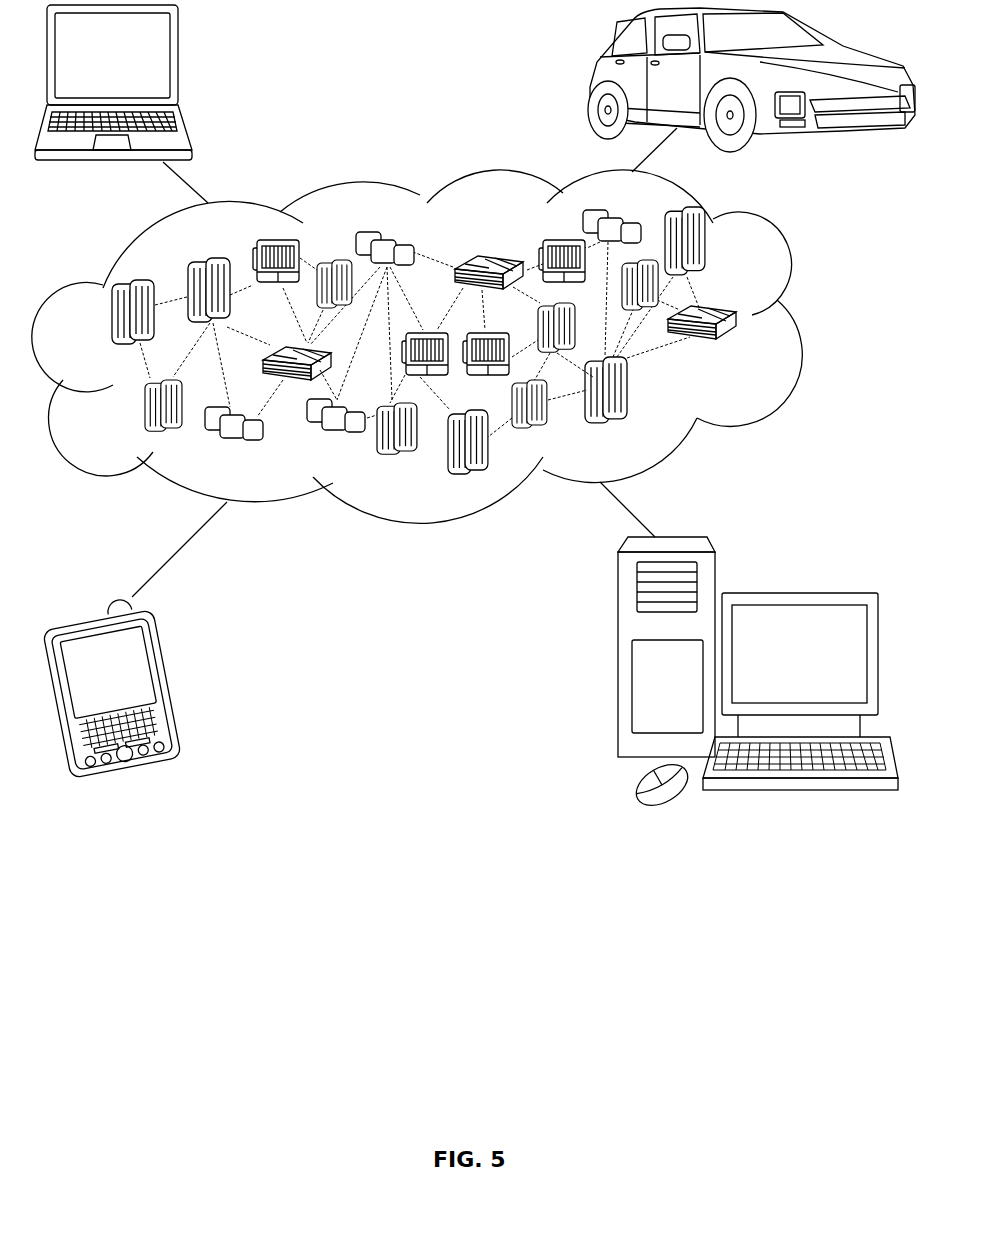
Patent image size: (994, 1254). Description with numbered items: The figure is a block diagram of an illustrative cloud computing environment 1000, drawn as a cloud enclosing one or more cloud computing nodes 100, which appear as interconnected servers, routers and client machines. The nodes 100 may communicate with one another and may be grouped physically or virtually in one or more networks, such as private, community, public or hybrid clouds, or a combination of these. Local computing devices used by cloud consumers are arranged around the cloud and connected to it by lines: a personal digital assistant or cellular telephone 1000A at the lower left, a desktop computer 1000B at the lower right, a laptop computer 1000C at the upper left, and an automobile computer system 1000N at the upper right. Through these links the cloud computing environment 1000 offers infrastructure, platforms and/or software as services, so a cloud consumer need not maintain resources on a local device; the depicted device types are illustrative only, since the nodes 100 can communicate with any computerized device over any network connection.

The cloud computing environment 1000 is at (797, 322).
The cloud computing nodes 100 is at (752, 352).
The personal digital assistant (PDA) or cellular telephone 1000A is at (170, 680).
The desktop computer 1000B is at (808, 573).
The laptop computer 1000C is at (182, 62).
The automobile computer system 1000N is at (590, 78).